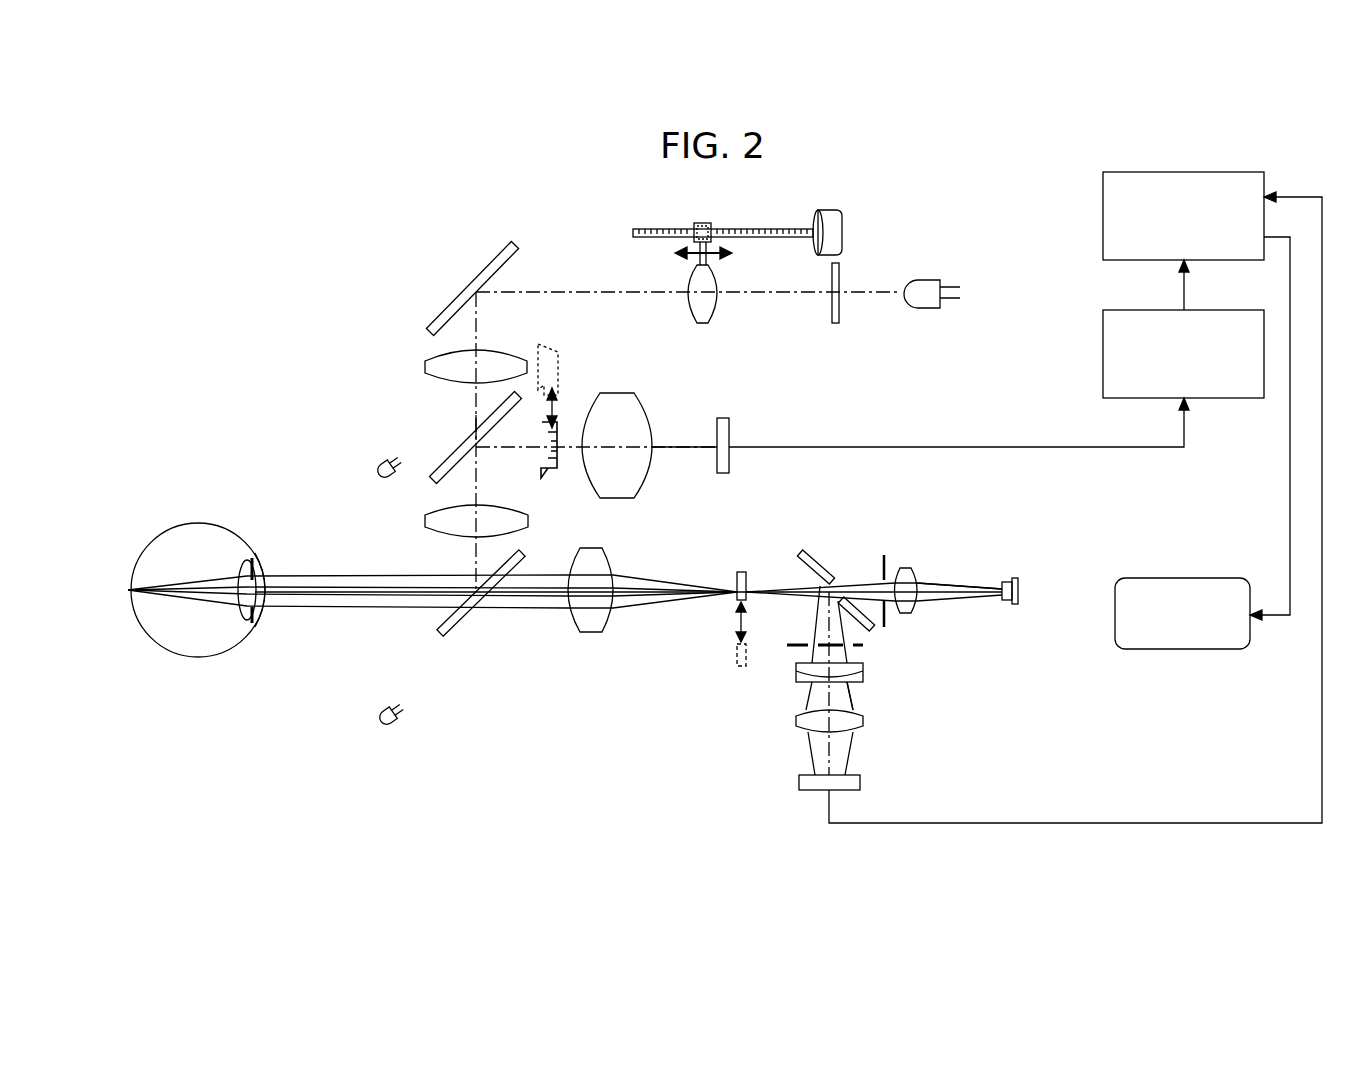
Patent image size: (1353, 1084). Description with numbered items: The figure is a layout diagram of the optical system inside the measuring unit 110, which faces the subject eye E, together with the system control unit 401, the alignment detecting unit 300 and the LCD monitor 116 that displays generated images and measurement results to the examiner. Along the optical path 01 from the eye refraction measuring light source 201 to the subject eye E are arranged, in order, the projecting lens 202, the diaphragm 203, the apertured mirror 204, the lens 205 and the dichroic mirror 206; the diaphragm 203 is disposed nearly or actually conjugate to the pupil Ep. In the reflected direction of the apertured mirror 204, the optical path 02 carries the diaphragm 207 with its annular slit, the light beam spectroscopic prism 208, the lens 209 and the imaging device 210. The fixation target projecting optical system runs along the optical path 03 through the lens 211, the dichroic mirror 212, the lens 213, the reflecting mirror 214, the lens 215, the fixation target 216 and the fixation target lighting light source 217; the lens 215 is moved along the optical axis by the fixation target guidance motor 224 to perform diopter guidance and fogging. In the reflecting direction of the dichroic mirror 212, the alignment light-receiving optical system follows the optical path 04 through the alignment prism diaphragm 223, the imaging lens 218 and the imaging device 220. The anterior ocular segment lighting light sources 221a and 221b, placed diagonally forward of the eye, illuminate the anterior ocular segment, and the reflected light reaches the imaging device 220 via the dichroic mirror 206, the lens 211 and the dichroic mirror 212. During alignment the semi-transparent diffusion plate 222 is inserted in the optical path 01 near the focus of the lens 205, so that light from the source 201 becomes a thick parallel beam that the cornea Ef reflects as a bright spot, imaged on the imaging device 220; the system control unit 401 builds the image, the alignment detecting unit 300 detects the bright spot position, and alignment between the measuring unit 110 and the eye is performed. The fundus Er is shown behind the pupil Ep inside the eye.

The subject eye E is at (192, 532).
The pupil Ep is at (248, 565).
The cornea Ef is at (258, 622).
The retina Er is at (128, 604).
The eye refraction measuring light source 201 is at (1012, 585).
The projecting lens 202 is at (905, 578).
The diaphragm 203 is at (888, 618).
The apertured mirror 204 is at (800, 560).
The lens 205 is at (590, 628).
The dichroic mirror 206 is at (453, 628).
The diaphragm 207 is at (868, 646).
The light beam spectroscopic prism 208 is at (798, 668).
The lens 209 is at (860, 722).
The imaging device 210 is at (800, 782).
The lens 211 is at (432, 525).
The dichroic mirror 212 is at (448, 460).
The lens 213 is at (432, 365).
The reflecting mirror 214 is at (490, 268).
The lens 215 is at (708, 308).
The fixation target 216 is at (840, 283).
The fixation target lighting light source 217 is at (928, 305).
The imaging lens 218 is at (632, 405).
The imaging device 220 is at (729, 455).
The anterior ocular segment lighting light source 221a is at (377, 735).
The anterior ocular segment lighting light source 221b is at (378, 470).
The semi-transparent diffusion plate 222 is at (738, 598).
The alignment prism diaphragm 223 is at (548, 478).
The fixation target guidance motor 224 is at (845, 220).
The optical path 01 is at (955, 597).
The optical path 02 is at (850, 745).
The optical path 03 is at (475, 418).
The optical path 04 is at (664, 448).
The measuring unit 110 is at (555, 800).
The LCD monitor 116 is at (1218, 578).
The alignment detecting unit 300 is at (1240, 310).
The system control unit 401 is at (1240, 172).